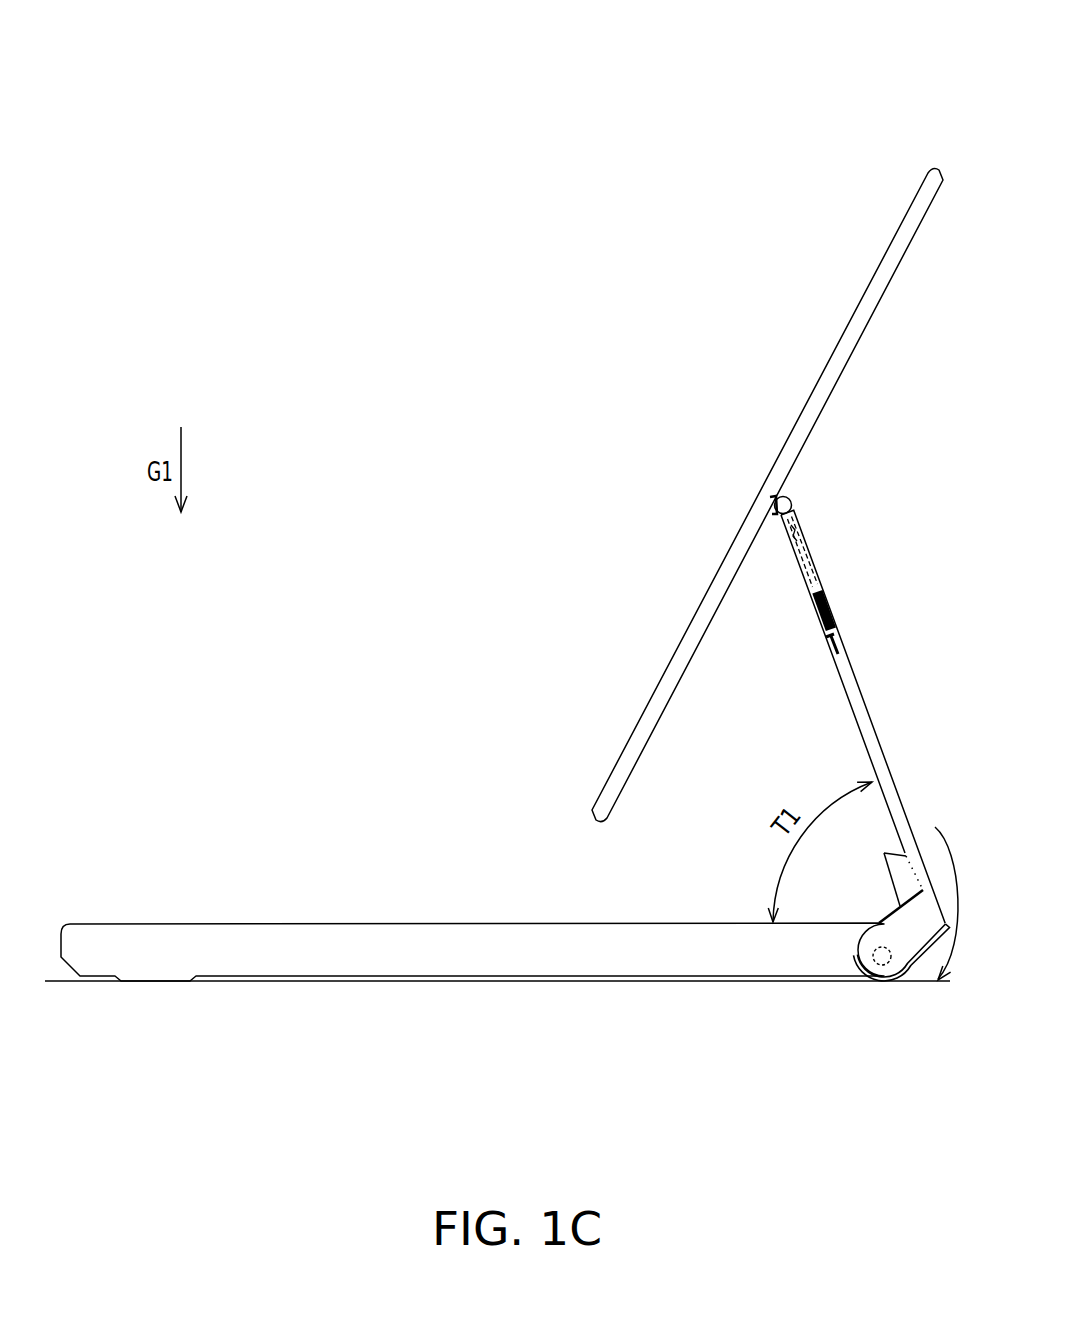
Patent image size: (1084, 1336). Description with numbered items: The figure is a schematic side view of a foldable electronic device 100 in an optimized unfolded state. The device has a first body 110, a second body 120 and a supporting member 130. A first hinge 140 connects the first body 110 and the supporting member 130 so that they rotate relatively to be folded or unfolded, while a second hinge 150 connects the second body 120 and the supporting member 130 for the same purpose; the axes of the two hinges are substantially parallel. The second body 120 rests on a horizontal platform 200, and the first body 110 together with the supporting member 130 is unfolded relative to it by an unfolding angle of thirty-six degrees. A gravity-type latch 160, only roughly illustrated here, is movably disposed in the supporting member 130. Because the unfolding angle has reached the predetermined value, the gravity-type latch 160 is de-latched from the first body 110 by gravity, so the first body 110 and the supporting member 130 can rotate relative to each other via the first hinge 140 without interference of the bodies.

The foldable electronic device 100 is at (825, 48).
The first body 110 is at (808, 417).
The second body 120 is at (215, 938).
The supporting member 130 is at (858, 703).
The first hinge 140 is at (792, 505).
The second hinge 150 is at (886, 963).
The gravity-type latch 160 is at (790, 564).
The horizontal platform 200 is at (935, 887).